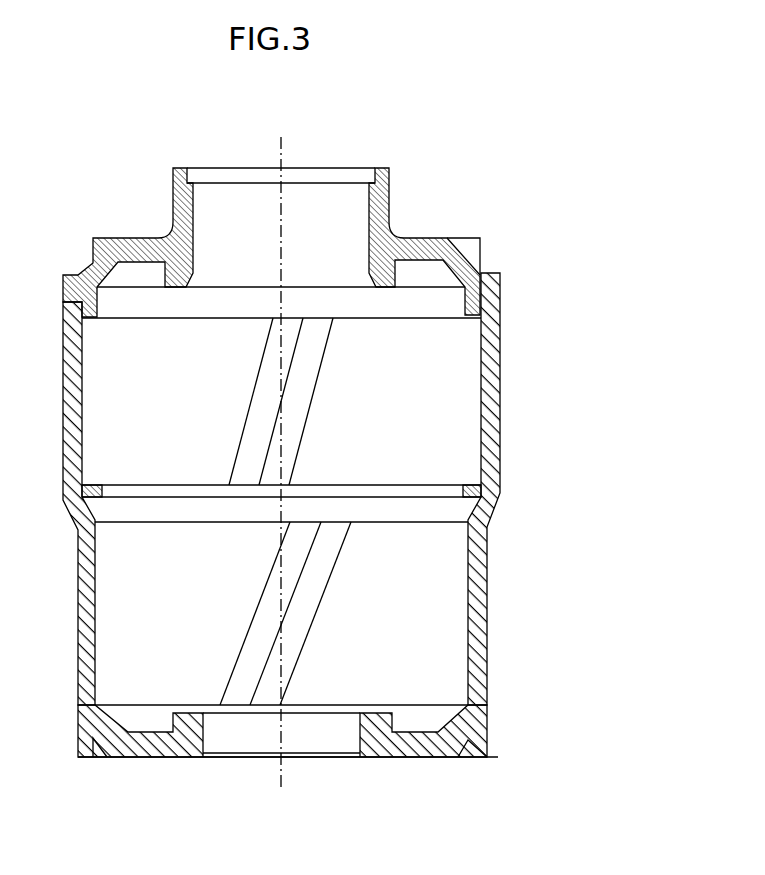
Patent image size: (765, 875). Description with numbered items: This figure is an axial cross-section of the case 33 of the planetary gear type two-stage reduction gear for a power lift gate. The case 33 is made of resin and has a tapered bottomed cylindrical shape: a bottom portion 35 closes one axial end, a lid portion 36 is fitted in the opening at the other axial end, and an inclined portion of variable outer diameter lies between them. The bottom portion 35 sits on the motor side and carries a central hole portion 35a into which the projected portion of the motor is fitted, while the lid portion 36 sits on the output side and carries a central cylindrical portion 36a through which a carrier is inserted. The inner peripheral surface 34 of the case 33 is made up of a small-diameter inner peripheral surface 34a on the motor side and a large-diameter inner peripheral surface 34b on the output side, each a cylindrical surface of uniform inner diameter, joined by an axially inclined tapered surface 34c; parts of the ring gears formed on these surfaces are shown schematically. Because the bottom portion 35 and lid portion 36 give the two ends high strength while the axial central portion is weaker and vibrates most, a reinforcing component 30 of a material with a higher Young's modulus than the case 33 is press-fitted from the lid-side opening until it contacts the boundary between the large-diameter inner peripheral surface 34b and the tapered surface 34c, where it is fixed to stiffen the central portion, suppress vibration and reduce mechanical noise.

The reinforcing component 30 is at (193, 483).
The case 33 is at (513, 350).
The inner peripheral surface 34 is at (360, 516).
The small-diameter inner peripheral surface 34a is at (447, 565).
The large-diameter inner peripheral surface 34b is at (447, 470).
The tapered surface 34c is at (447, 508).
The bottom portion 35 is at (288, 765).
The hole portion 35a is at (223, 743).
The lid portion 36 is at (267, 241).
The cylindrical portion 36a is at (388, 211).